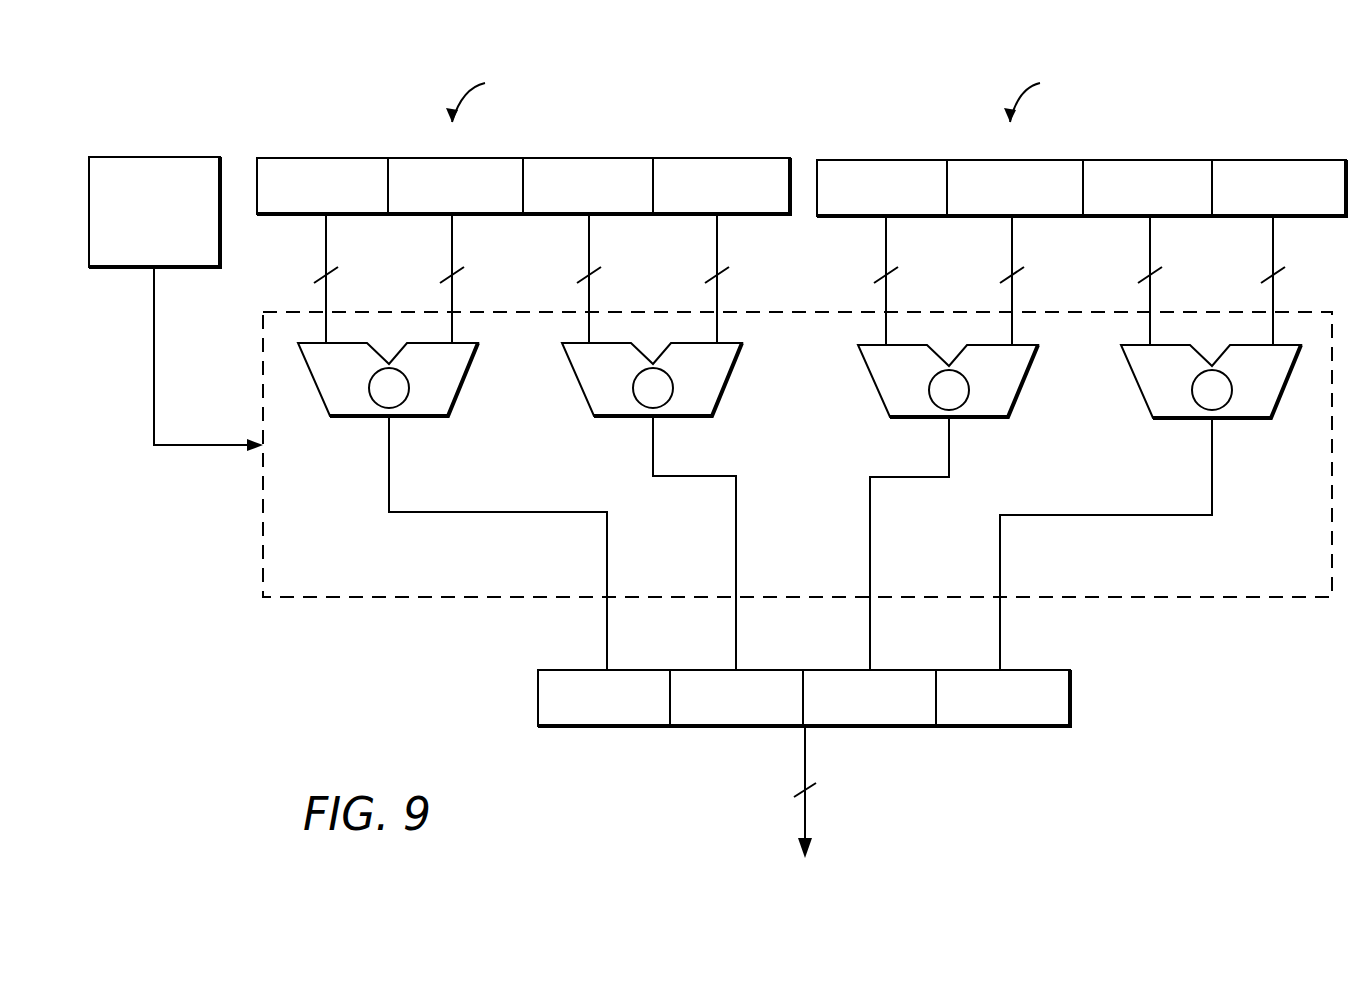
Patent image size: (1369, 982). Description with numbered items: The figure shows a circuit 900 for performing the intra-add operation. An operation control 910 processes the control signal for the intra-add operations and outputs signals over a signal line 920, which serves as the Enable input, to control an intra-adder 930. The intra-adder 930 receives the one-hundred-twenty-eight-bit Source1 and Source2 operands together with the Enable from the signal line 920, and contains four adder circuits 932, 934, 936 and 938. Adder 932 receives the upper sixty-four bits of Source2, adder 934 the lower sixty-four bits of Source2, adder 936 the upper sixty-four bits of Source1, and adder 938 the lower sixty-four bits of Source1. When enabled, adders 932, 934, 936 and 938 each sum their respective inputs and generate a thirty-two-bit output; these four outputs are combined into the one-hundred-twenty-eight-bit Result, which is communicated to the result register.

The circuit 900 is at (1270, 117).
The operation control 910 is at (157, 157).
The signal line 920 is at (188, 447).
The intra-adder 930 is at (1172, 597).
The adder 932 is at (338, 395).
The adder 934 is at (603, 395).
The adder 936 is at (898, 398).
The adder 938 is at (1162, 398).